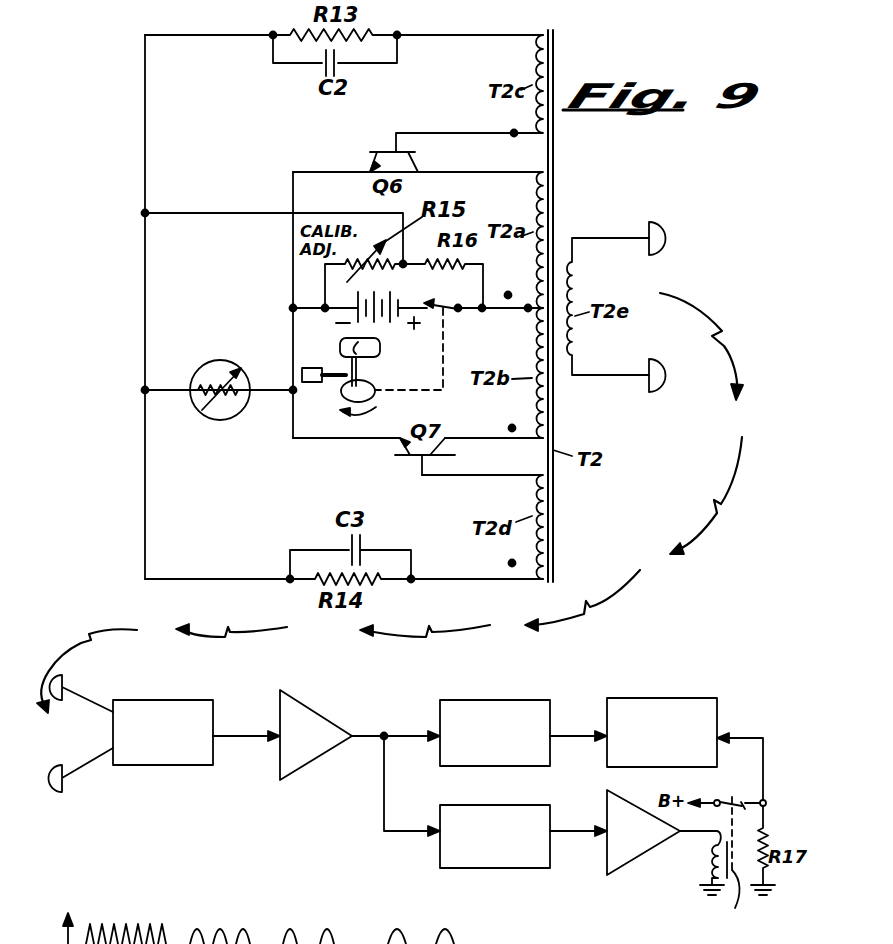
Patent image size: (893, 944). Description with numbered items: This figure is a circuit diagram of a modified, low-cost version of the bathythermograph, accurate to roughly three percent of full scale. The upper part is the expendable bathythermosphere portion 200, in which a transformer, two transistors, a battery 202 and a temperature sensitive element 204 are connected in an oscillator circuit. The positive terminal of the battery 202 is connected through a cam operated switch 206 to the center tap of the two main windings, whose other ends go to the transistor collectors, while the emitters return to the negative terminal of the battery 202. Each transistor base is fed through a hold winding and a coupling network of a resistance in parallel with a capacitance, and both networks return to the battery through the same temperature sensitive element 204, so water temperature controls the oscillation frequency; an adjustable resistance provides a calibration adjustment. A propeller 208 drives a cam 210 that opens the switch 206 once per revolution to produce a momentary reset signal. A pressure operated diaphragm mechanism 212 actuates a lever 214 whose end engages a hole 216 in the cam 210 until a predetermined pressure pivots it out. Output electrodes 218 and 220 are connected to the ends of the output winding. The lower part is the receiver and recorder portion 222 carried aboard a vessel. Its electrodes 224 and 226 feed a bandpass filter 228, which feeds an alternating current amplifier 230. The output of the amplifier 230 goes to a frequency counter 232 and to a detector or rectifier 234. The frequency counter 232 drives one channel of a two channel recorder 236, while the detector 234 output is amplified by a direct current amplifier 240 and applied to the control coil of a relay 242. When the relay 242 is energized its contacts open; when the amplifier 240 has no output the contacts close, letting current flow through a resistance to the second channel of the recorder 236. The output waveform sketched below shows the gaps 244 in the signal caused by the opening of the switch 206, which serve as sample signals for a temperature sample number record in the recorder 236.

The bathythermosphere portion 200 is at (128, 281).
The battery 202 is at (352, 303).
The temperature sensitive element 204 is at (220, 377).
The cam operated switch 206 is at (443, 293).
The propeller 208 is at (381, 347).
The cam 210 is at (351, 422).
The pressure operated diaphragm mechanism 212 is at (318, 391).
The lever 214 is at (332, 371).
The hole 216 is at (372, 387).
The output electrode 218 is at (666, 238).
The output electrode 220 is at (666, 377).
The receiver and recorder portion 222 is at (138, 763).
The electrode 224 is at (70, 681).
The electrode 226 is at (70, 782).
The bandpass filter 228 is at (165, 765).
The alternating current amplifier 230 is at (291, 771).
The frequency counter 232 is at (455, 700).
The detector or rectifier 234 is at (465, 868).
The two channel recorder 236 is at (640, 698).
The direct current amplifier 240 is at (620, 869).
The relay 242 is at (720, 869).
The gaps 244 is at (178, 943).